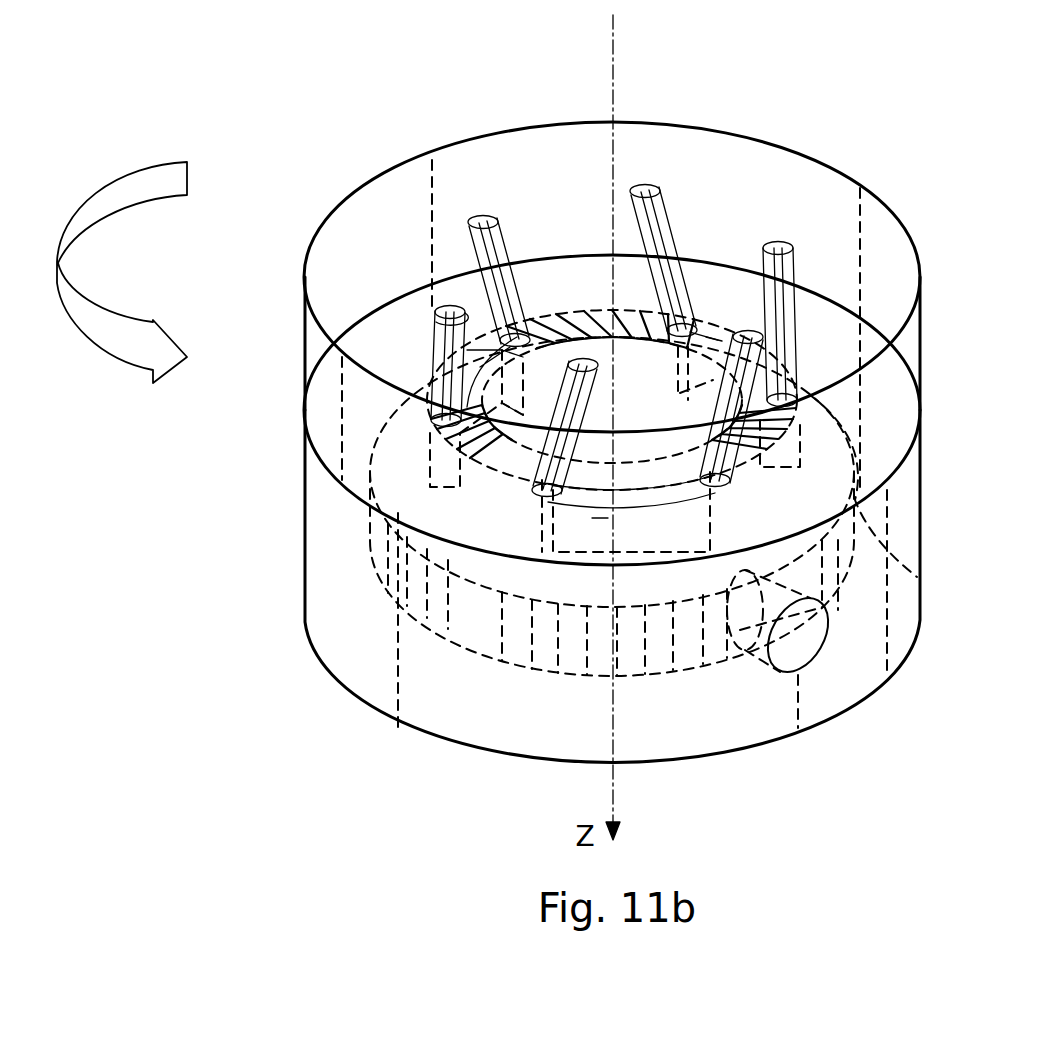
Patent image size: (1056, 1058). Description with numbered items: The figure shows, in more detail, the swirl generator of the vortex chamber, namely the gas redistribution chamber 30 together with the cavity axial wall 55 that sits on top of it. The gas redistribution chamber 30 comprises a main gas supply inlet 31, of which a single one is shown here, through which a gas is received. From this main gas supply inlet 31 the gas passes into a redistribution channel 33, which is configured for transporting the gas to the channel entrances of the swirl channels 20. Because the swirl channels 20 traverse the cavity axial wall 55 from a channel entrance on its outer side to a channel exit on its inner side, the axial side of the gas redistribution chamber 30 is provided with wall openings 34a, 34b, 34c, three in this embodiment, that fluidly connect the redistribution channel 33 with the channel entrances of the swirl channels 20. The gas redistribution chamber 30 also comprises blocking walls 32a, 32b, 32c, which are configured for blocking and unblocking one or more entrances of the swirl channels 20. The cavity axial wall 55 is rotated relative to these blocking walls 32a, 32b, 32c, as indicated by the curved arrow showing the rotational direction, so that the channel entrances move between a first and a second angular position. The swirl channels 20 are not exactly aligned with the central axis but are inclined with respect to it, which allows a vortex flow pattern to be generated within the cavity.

The swirl channel 20 is at (440, 308).
The gas redistribution chamber 30 is at (945, 440).
The main gas supply inlet 31 is at (795, 633).
The blocking wall 32a is at (618, 316).
The blocking wall 32b is at (743, 460).
The blocking wall 32c is at (482, 463).
The redistribution channel 33 is at (547, 640).
The wall opening 34a is at (452, 318).
The wall opening 34b is at (718, 337).
The wall opening 34c is at (600, 518).
The cavity axial wall 55 is at (273, 252).